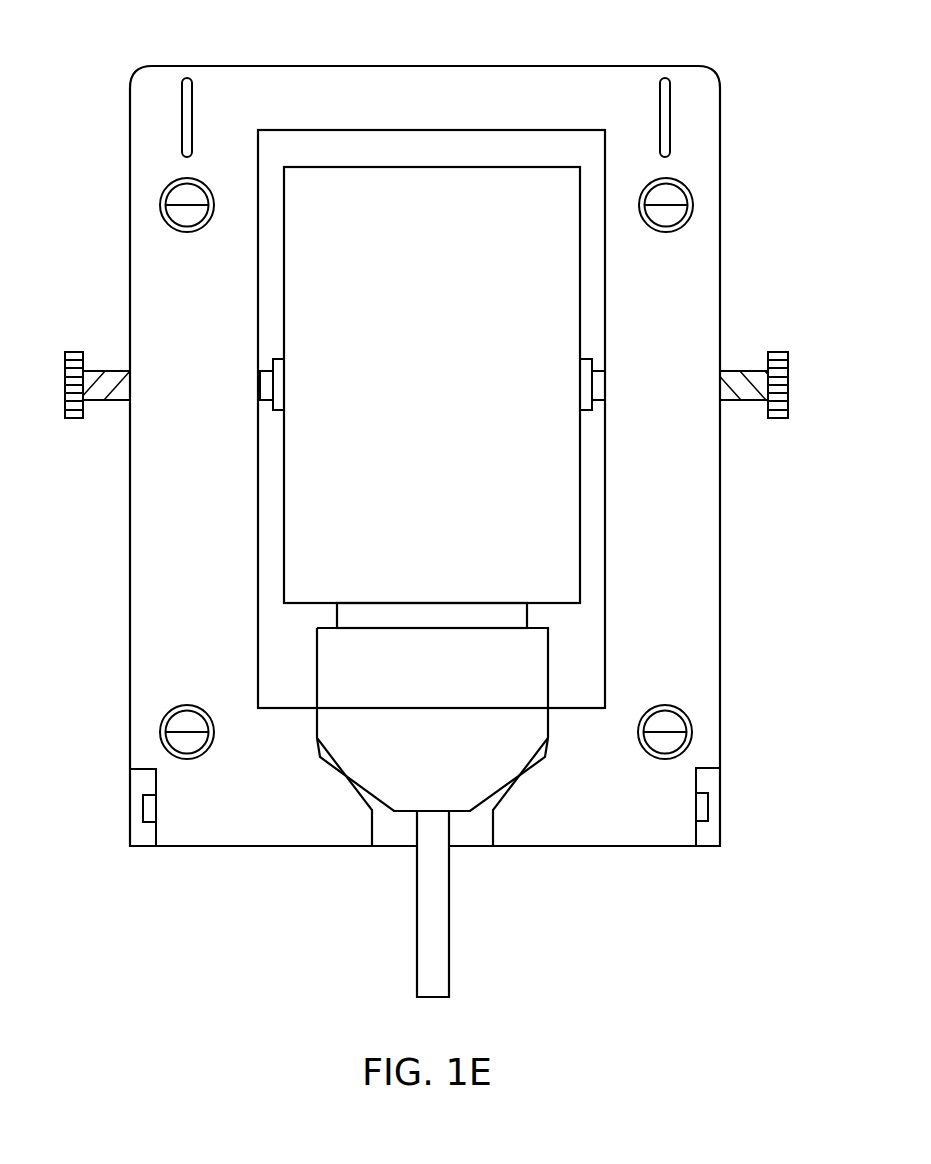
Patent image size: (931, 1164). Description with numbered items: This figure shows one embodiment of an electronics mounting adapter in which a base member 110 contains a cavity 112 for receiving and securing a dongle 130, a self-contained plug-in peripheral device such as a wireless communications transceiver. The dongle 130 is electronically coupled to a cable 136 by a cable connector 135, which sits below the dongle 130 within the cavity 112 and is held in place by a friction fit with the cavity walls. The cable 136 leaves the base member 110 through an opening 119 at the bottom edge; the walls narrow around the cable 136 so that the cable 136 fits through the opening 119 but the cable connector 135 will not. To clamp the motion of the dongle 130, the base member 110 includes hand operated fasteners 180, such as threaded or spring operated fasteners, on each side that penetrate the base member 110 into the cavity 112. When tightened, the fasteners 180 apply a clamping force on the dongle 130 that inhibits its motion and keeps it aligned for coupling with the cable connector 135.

The base member 110 is at (425, 66).
The cavity 112 is at (258, 297).
The dongle 130 is at (457, 412).
The cable connector 135 is at (409, 691).
The cable 136 is at (449, 926).
The opening 119 is at (389, 853).
The hand operated fasteners 180 is at (73, 352).